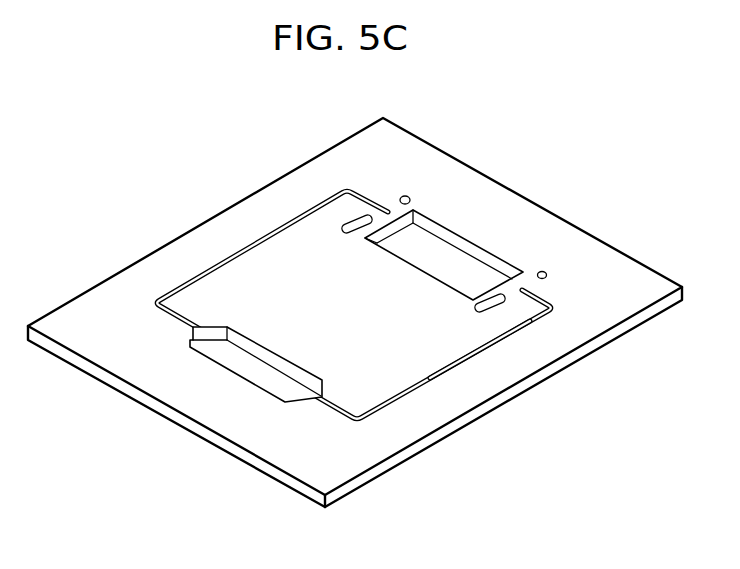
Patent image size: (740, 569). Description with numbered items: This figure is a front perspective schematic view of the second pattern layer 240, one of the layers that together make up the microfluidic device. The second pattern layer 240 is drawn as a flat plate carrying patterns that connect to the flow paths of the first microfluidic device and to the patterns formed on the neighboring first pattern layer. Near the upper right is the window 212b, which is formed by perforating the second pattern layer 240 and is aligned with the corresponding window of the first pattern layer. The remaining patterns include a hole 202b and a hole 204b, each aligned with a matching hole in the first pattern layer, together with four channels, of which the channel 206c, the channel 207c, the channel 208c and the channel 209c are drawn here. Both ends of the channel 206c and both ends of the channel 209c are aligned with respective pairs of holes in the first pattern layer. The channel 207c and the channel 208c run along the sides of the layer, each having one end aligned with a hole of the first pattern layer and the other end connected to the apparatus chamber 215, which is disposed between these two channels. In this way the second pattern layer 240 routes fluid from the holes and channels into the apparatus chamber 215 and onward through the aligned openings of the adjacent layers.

The second pattern layer 240 is at (456, 422).
The channel 207c is at (266, 236).
The side portion of frame 208c is at (482, 353).
The channel 206c is at (360, 222).
The channel 209c is at (495, 303).
The hole 202b is at (403, 195).
The hole 204b is at (546, 280).
The window 212b is at (462, 267).
The apparatus chamber 215 is at (261, 374).